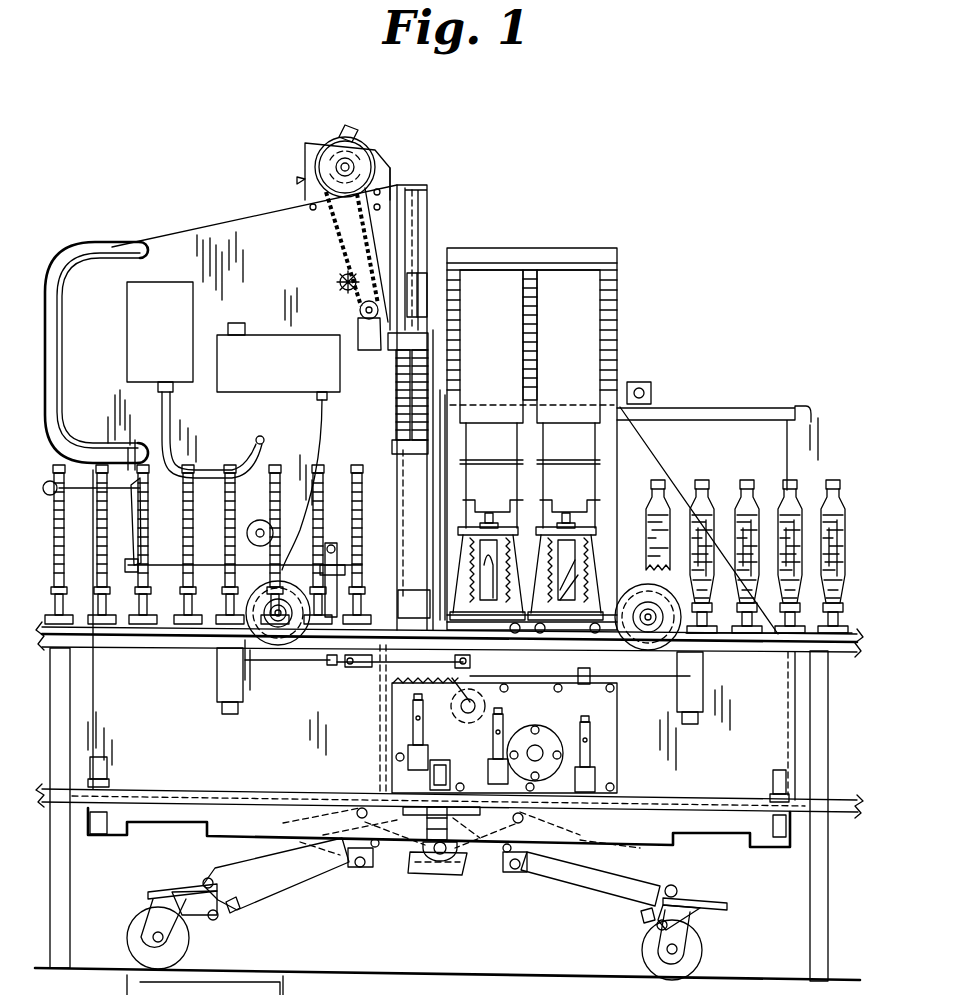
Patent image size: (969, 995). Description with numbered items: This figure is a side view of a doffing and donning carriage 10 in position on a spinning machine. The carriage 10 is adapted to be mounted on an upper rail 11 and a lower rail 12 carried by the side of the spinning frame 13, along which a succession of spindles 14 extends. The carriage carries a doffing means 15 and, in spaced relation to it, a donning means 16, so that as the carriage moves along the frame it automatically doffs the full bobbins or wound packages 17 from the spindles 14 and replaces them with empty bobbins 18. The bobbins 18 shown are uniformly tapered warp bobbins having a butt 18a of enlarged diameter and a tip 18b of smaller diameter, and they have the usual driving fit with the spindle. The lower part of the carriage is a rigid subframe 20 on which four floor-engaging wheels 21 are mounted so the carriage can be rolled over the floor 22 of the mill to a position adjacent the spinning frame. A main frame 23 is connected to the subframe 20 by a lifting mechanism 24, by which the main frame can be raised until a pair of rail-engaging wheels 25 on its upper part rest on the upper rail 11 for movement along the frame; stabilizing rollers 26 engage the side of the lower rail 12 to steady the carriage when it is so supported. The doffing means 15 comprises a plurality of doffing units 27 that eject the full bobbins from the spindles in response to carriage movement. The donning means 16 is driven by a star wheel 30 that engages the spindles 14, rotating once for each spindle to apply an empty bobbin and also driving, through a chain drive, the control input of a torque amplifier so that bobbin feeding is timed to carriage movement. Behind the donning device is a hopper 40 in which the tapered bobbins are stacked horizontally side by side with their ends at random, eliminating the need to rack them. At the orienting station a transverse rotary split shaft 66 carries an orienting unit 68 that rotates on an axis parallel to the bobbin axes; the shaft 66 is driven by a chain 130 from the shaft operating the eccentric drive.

The carriage 10 is at (778, 390).
The upper rail 11 is at (834, 656).
The lower rail 12 is at (838, 813).
The spinning frame 13 is at (817, 753).
The spindles 14 is at (837, 627).
The doffing means 15 is at (634, 357).
The donning means 16 is at (442, 308).
The wound packages 17 is at (847, 520).
The empty bobbins 18 is at (235, 506).
The butt 18a is at (182, 600).
The tip 18b is at (200, 470).
The subframe 20 is at (192, 877).
The floor-engaging wheels 21 is at (194, 953).
The floor 22 is at (533, 976).
The main frame 23 is at (172, 820).
The lifting mechanism 24 is at (317, 896).
The rail-engaging wheels 25 is at (282, 645).
The stabilizing rollers 26 is at (92, 808).
The doffing units 27 is at (502, 508).
The star wheel 30 is at (373, 656).
The hopper 40 is at (216, 217).
The rotary split shaft 66 is at (348, 166).
The orienting unit 68 is at (334, 127).
The chain 130 is at (350, 256).